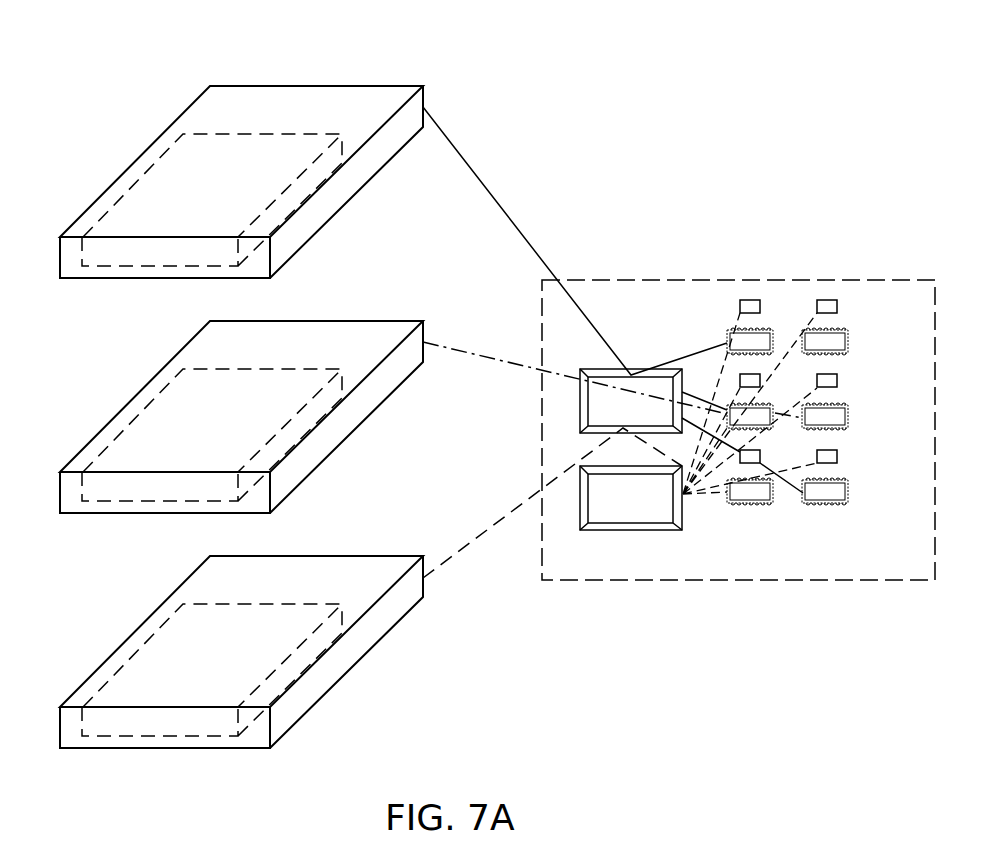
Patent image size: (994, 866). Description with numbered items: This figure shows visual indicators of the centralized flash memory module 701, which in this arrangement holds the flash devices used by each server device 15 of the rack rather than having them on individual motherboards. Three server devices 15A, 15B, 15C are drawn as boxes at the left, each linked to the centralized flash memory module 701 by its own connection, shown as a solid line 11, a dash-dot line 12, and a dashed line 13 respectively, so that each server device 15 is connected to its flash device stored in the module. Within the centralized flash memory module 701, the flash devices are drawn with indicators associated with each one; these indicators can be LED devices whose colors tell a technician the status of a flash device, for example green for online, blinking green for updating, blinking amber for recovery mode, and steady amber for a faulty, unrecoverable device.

The first external device 15A is at (378, 86).
The second external device 15B is at (385, 320).
The third external device 15C is at (375, 557).
The first signal path 11 is at (528, 243).
The second signal path 12 is at (499, 360).
The third signal path 13 is at (482, 535).
The centralized flash memory module 701 is at (860, 280).
The server device 15 is at (692, 865).